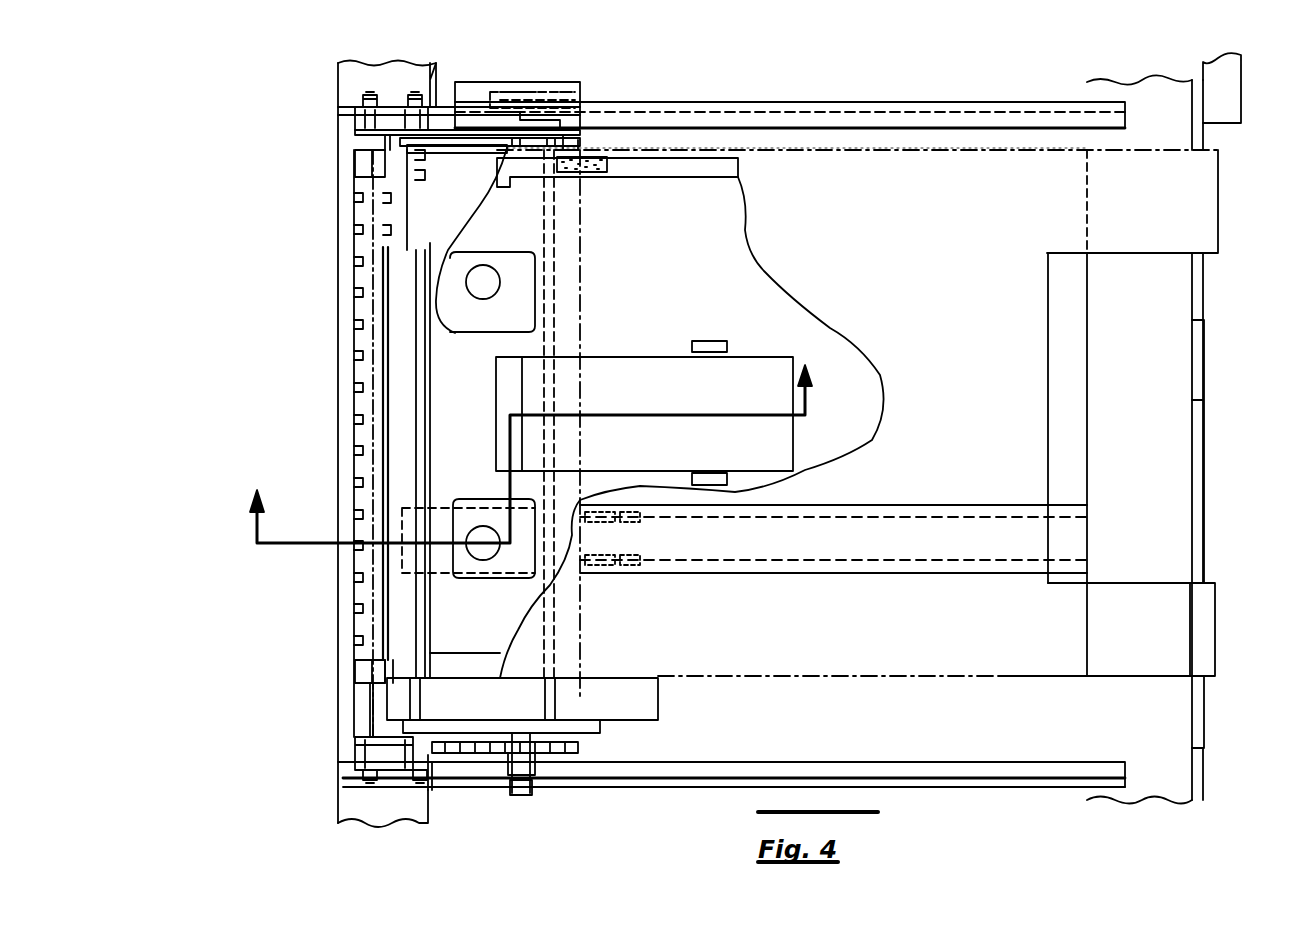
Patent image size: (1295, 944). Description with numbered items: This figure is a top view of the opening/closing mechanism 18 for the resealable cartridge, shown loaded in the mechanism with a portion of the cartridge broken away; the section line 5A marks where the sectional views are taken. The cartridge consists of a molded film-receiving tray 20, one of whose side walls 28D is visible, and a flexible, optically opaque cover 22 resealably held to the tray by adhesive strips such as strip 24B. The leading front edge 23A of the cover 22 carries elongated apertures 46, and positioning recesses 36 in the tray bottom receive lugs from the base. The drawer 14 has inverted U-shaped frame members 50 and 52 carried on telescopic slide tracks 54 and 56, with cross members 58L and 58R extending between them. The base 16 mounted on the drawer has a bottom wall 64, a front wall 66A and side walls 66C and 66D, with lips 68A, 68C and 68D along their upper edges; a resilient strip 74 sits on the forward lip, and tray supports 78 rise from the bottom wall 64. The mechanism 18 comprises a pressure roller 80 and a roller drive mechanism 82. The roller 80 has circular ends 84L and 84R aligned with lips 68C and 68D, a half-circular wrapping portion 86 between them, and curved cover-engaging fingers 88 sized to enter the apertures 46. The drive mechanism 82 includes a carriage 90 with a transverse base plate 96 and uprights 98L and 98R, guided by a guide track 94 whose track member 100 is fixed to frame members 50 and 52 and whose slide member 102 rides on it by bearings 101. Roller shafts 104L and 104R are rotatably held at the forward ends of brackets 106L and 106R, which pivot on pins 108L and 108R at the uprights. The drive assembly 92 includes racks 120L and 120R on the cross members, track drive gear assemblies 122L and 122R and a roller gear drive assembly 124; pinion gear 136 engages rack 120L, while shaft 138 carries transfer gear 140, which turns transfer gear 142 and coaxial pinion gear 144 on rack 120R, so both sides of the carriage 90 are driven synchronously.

The drawer 14 is at (205, 738).
The base 16 is at (765, 270).
The opening/closing mechanism 18 is at (300, 778).
The tray 20 is at (558, 232).
The cover 22 is at (440, 235).
The front edge of cover 23A is at (382, 160).
The adhesive strip 24B is at (605, 165).
The side wall 28D is at (530, 190).
The positioning recess 36 is at (490, 278).
The elongated apertures 46 is at (382, 200).
The frame member 50 is at (368, 808).
The frame member 52 is at (1165, 800).
The telescopic slide track 54 is at (428, 92).
The telescopic slide track 56 is at (1202, 340).
The cross member 58R is at (903, 102).
The cross member 58L is at (1003, 788).
The bottom wall 64 is at (672, 312).
The front wall 66A is at (424, 405).
The side wall 66C is at (453, 655).
The side wall 66D is at (668, 186).
The forward lip 68A is at (402, 445).
The lip 68C is at (737, 699).
The lip 68D is at (720, 176).
The strip of resilient material 74 is at (395, 276).
The tray supports 78 is at (720, 345).
The pressure roller 80 is at (372, 652).
The roller drive mechanism 82 is at (397, 793).
The roller end 84R is at (353, 163).
The roller end 84L is at (365, 718).
The wrapping portion 86 is at (352, 598).
The cover-engaging fingers 88 is at (352, 356).
The carriage 90 is at (585, 610).
The drive assembly 92 is at (495, 838).
The guide track 94 is at (915, 503).
The base plate 96 is at (570, 670).
The upright 98R is at (588, 150).
The upright 98L is at (600, 740).
The track member 100 is at (960, 560).
The bearings 101 is at (640, 560).
The slide member 102 is at (780, 560).
The shaft 104R is at (372, 120).
The shaft 104L is at (365, 735).
The bracket 106R is at (370, 95).
The bracket 106L is at (362, 775).
The pivot pin 108R is at (415, 95).
The pivot pin 108L is at (420, 790).
The rack 120R is at (995, 118).
The rack 120L is at (918, 770).
The track drive gear assembly 122R is at (560, 60).
The track drive gear assembly 122L is at (542, 785).
The roller gear drive assembly 124 is at (462, 758).
The pinion gear 136 is at (512, 792).
The shaft 138 is at (548, 393).
The transfer gear 140 is at (592, 90).
The transfer gear 142 is at (525, 95).
The pinion gear 144 is at (484, 158).
The section line 5A is at (520, 454).